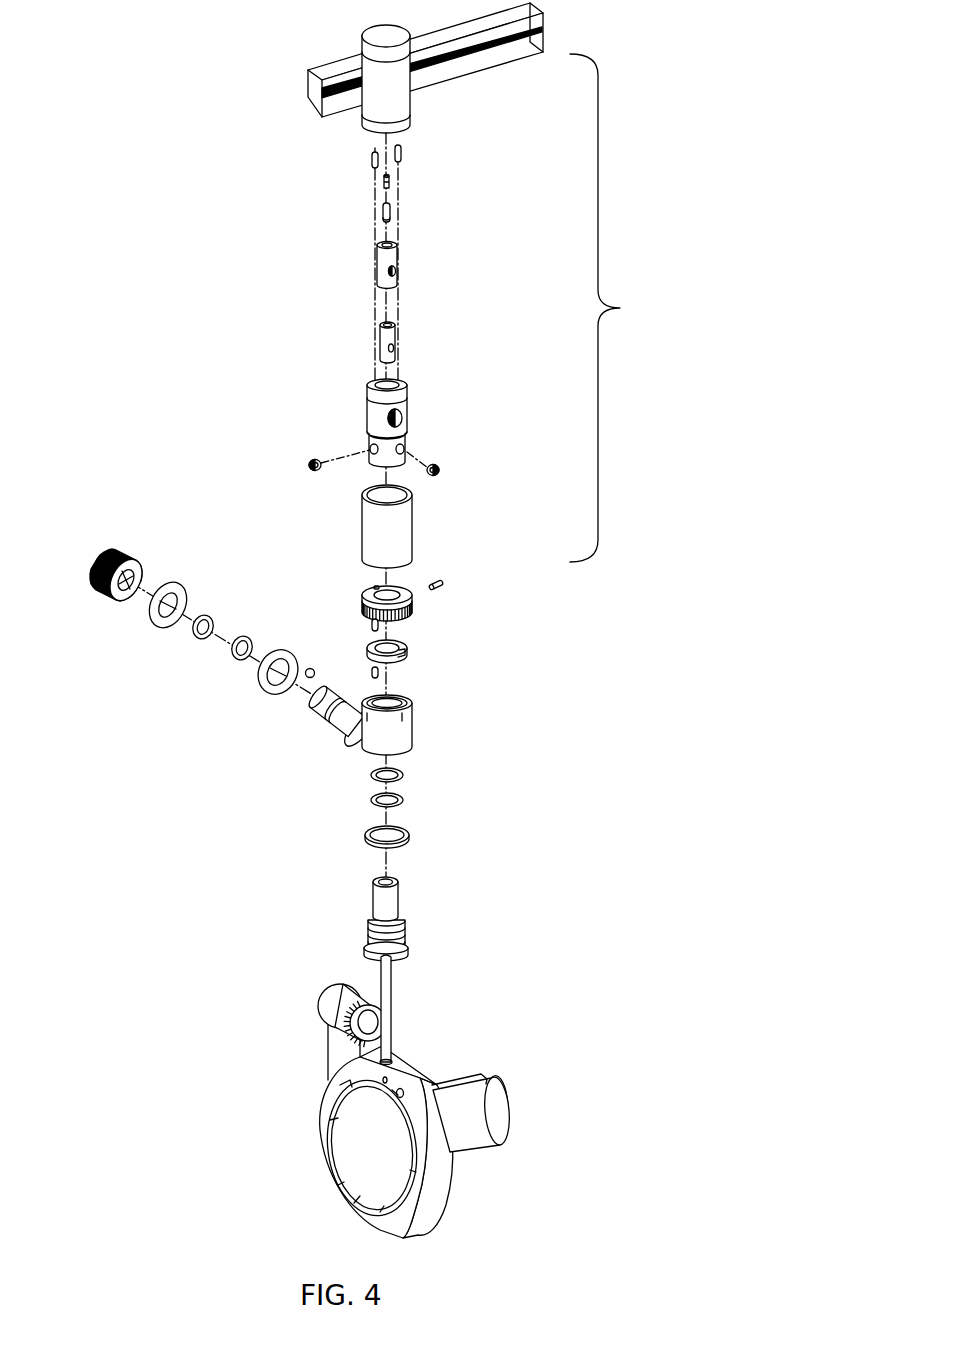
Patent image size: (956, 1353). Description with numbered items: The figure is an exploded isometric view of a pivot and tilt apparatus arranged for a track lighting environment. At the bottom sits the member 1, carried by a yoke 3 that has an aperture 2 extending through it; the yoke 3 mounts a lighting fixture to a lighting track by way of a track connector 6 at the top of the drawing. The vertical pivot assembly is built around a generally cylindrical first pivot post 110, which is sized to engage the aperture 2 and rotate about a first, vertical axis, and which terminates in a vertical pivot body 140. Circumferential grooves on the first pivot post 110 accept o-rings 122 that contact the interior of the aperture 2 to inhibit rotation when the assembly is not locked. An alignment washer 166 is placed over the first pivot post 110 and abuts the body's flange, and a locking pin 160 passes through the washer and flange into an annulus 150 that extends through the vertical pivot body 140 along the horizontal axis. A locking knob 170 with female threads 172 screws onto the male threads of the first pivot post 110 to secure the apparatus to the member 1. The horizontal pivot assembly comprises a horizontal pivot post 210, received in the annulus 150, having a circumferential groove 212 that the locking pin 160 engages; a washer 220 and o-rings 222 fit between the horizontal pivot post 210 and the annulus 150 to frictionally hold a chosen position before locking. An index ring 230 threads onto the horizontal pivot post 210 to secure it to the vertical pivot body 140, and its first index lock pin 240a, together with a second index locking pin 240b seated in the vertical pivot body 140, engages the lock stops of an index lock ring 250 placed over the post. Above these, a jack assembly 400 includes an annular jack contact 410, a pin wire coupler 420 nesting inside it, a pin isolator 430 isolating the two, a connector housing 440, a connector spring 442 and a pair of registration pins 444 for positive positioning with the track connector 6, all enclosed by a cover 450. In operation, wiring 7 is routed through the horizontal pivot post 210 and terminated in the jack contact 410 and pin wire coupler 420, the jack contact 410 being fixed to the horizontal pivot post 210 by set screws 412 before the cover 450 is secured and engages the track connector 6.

The member 1 is at (340, 1068).
The aperture 2 is at (365, 1022).
The yoke 3 is at (330, 1003).
The track connector 6 is at (400, 107).
The wiring 7 is at (483, 62).
The first pivot post 110 is at (335, 718).
The o-rings 122 is at (233, 658).
The vertical pivot body 140 is at (400, 732).
The annulus 150 is at (398, 705).
The locking pin 160 is at (310, 668).
The alignment washer 166 is at (262, 692).
The locking knob 170 is at (95, 590).
The female threads 172 is at (130, 576).
The horizontal pivot post 210 is at (380, 900).
The circumferential groove 212 is at (375, 931).
The washer 220 is at (410, 836).
The o-ring 222 is at (372, 800).
The index ring 230 is at (410, 611).
The first index lock pin 240a is at (380, 625).
The second index locking pin 240b is at (380, 678).
The index lock ring 250 is at (405, 652).
The jack assembly 400 is at (620, 308).
The jack contact 410 is at (372, 417).
The set screws 412 is at (310, 467).
The pin wire coupler 420 is at (381, 345).
The pin isolator 430 is at (378, 262).
The connector housing 440 is at (377, 212).
The connector spring 442 is at (377, 183).
The registration pins 444 is at (395, 150).
The cover 450 is at (366, 533).